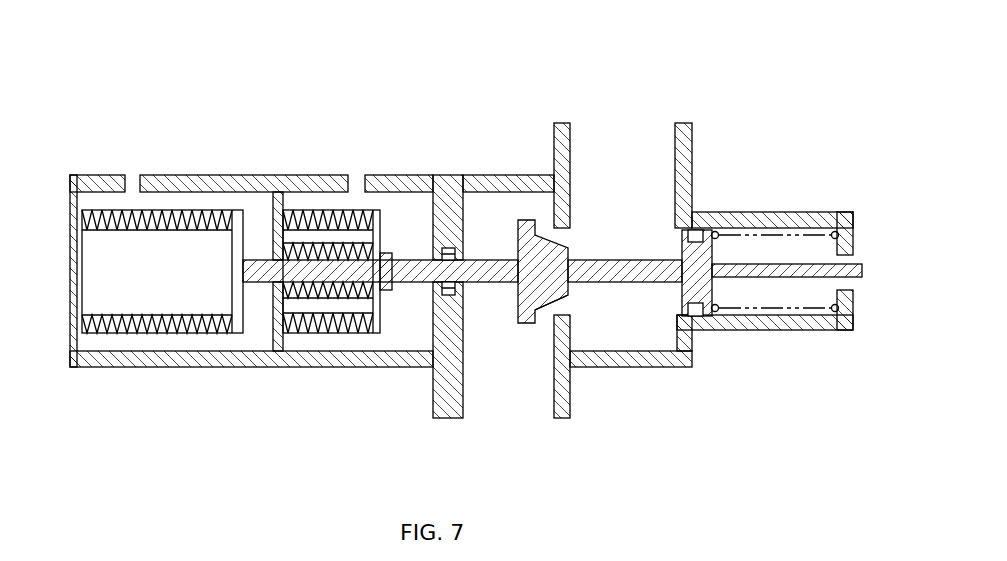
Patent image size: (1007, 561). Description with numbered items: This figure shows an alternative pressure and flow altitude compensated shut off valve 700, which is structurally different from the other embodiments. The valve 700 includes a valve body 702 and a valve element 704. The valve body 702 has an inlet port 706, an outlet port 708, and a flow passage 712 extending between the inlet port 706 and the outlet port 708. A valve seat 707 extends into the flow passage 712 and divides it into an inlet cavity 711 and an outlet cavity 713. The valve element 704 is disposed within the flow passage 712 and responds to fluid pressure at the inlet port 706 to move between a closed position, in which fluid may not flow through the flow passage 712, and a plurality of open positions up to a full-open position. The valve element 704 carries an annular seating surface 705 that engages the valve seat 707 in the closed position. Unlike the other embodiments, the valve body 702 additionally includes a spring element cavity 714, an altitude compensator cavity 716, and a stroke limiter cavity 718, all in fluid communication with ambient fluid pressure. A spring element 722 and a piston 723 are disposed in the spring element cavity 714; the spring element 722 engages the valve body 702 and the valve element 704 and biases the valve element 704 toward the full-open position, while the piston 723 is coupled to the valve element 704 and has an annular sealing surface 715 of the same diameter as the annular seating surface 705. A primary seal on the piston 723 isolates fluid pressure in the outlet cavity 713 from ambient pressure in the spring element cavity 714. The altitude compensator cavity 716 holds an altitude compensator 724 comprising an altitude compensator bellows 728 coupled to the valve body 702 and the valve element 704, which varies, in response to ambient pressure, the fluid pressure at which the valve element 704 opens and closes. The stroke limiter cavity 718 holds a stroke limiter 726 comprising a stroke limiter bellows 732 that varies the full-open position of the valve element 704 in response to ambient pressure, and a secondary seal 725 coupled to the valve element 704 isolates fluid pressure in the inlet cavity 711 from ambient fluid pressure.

The pressure and flow altitude compensated shut off valve 700 is at (462, 245).
The valve body 702 is at (308, 224).
The valve element 704 is at (598, 292).
The annular seating surface 705 is at (545, 309).
The inlet port 706 is at (500, 412).
The valve seat 707 is at (534, 266).
The outlet port 708 is at (703, 250).
The inlet cavity 711 is at (506, 355).
The flow passage 712 is at (662, 326).
The outlet cavity 713 is at (637, 205).
The spring element cavity 714 is at (806, 247).
The annular sealing surface 715 is at (683, 304).
The altitude compensator cavity 716 is at (167, 204).
The stroke limiter cavity 718 is at (326, 275).
The spring element 722 is at (760, 232).
The piston 723 is at (695, 317).
The altitude compensator 724 is at (112, 198).
The secondary seal 725 is at (445, 297).
The stroke limiter 726 is at (392, 210).
The altitude compensator bellows 728 is at (147, 335).
The stroke limiter bellows 732 is at (310, 335).